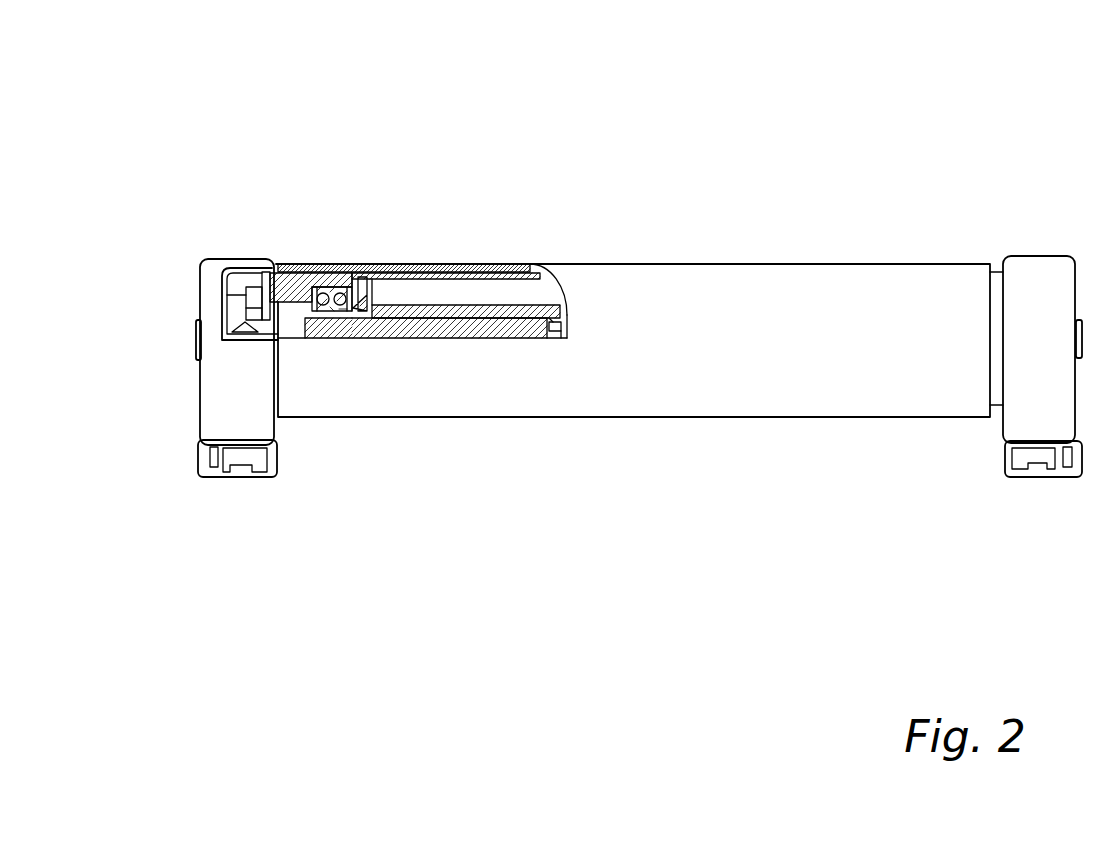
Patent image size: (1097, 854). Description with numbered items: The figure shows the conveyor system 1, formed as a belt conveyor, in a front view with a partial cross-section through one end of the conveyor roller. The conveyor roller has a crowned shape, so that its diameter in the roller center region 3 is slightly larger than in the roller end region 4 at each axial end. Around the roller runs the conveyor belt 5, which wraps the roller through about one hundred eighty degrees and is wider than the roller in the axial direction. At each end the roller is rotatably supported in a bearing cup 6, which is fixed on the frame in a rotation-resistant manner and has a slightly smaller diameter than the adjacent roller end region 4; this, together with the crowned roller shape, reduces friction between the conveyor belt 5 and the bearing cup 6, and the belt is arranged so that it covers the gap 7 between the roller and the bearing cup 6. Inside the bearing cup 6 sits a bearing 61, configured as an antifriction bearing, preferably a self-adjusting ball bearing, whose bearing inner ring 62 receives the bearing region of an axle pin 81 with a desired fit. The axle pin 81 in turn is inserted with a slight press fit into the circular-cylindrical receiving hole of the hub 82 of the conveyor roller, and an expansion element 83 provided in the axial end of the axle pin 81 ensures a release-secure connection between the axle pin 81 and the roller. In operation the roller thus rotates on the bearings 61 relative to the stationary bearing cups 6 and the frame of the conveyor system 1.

The conveyor system 1 is at (270, 611).
The roller center region 3 is at (627, 238).
The roller end region 4 is at (379, 237).
The conveyor belt 5 is at (483, 266).
The bearing cup 6 is at (297, 270).
The bearing 61 is at (322, 270).
The bearing inner ring 62 is at (333, 313).
The gap 7 is at (362, 273).
The axle pin 81 is at (390, 338).
The hub 82 is at (449, 338).
The expansion element 83 is at (567, 317).